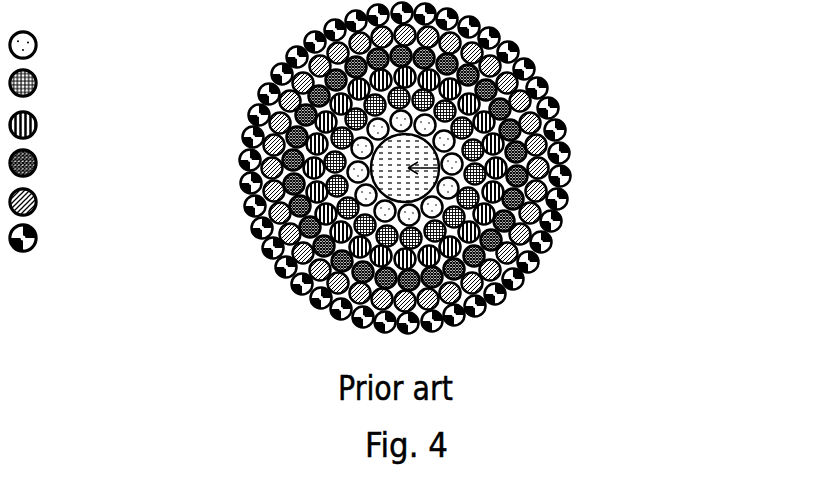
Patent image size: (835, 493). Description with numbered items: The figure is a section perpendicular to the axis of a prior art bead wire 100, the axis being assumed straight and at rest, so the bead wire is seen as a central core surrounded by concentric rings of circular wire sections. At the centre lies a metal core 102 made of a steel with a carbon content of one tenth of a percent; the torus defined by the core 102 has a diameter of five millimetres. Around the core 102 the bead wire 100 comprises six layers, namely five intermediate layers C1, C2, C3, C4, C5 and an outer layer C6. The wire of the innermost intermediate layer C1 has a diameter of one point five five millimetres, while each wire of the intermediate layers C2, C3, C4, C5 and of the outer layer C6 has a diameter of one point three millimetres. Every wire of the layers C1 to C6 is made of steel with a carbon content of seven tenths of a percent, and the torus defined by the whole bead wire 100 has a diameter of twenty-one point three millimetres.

The bead wire 100 is at (655, 98).
The metal core 102 is at (563, 193).
The intermediate layer C1 is at (42, 45).
The intermediate layer C2 is at (42, 83).
The intermediate layer C3 is at (42, 125).
The intermediate layer C4 is at (42, 163).
The intermediate layer C5 is at (42, 202).
The outer layer C6 is at (42, 238).